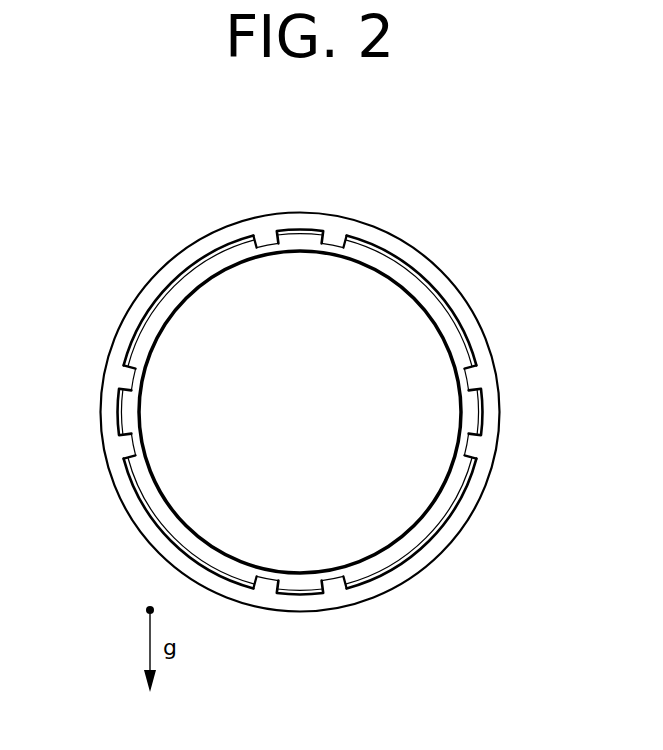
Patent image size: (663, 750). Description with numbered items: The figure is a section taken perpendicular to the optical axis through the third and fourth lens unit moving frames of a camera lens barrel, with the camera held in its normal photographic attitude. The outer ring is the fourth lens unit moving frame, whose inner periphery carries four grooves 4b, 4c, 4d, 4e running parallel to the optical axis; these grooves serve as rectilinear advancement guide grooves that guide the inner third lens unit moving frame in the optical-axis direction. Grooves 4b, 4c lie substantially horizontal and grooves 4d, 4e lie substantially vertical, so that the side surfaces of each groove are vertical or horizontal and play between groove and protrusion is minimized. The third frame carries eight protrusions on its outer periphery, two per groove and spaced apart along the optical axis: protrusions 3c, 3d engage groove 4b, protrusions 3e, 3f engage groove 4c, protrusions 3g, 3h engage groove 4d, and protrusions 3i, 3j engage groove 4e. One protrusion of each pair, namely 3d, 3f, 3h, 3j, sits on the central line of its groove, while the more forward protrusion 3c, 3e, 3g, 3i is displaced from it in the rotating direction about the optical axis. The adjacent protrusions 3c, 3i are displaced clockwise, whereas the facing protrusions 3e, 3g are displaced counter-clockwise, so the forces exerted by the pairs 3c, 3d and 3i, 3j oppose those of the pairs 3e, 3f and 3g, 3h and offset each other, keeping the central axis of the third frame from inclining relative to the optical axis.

The protrusion 3c is at (477, 402).
The protrusion 3d is at (516, 349).
The protrusion 3e is at (123, 388).
The protrusion 3f is at (115, 348).
The protrusion 3g is at (305, 240).
The protrusion 3h is at (326, 189).
The protrusion 3i is at (298, 585).
The protrusion 3j is at (309, 626).
The groove 4b is at (480, 435).
The groove 4c is at (125, 435).
The groove 4d is at (328, 231).
The groove 4e is at (327, 587).